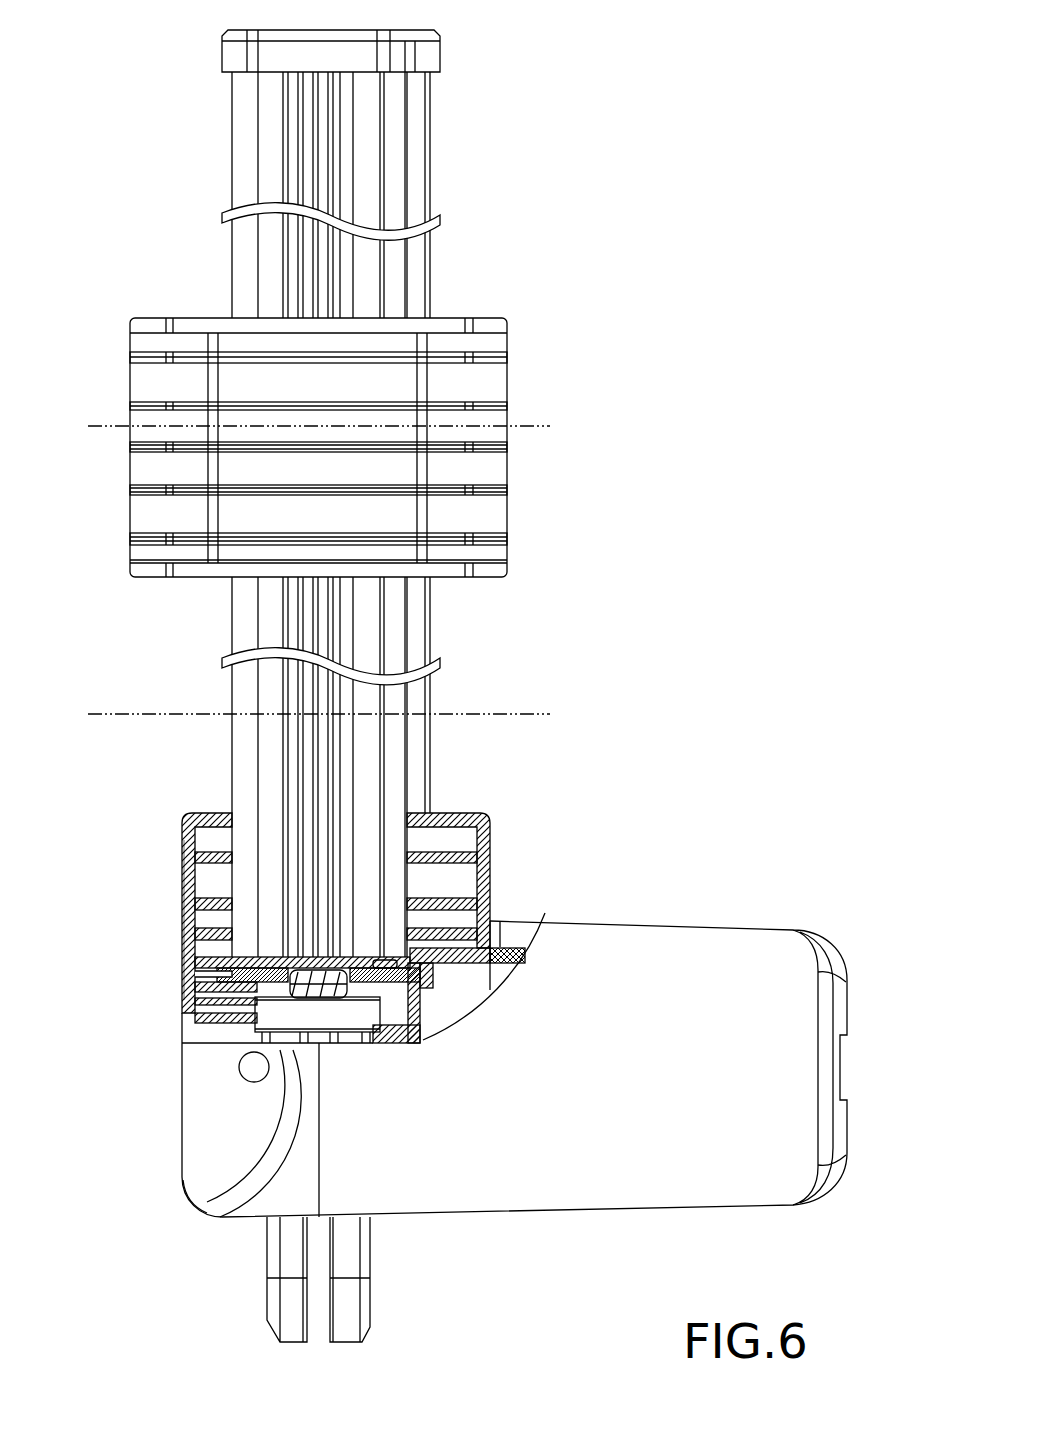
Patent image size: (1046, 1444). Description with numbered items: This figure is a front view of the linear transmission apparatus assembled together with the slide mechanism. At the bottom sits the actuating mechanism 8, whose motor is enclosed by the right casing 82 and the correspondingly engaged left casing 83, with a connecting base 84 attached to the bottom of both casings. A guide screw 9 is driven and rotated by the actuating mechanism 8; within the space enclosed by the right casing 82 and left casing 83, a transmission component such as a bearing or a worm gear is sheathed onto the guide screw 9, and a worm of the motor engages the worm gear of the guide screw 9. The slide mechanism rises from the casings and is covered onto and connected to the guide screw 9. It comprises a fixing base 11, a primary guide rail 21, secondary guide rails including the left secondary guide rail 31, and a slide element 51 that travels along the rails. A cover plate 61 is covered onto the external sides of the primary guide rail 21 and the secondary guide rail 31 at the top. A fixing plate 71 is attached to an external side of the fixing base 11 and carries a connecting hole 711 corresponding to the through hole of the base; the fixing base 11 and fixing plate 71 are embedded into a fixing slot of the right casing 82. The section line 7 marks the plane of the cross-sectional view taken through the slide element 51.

The cover plate 61 is at (235, 52).
The primary guide rail 21 is at (223, 161).
The left secondary guide rail 31 is at (440, 161).
The slide element 51 is at (490, 470).
The section line 7- 7 is at (98, 426).
The right casing 82 is at (490, 842).
The left casing 83 is at (182, 900).
The fixing base 11 is at (277, 958).
The connecting hole 711 is at (347, 967).
The fixing plate 71 is at (197, 974).
The guide screw 9 is at (242, 995).
The actuating mechanism 8 is at (167, 1103).
The connecting base 84 is at (288, 1292).